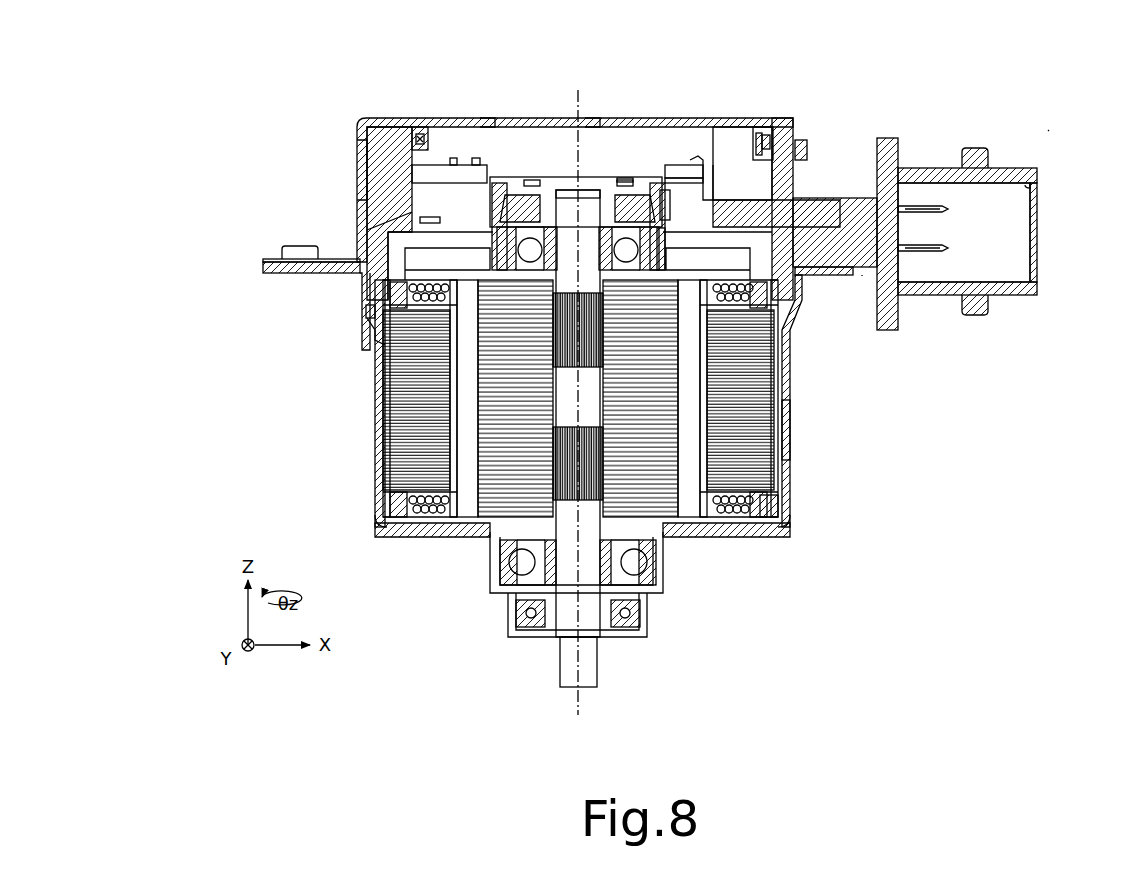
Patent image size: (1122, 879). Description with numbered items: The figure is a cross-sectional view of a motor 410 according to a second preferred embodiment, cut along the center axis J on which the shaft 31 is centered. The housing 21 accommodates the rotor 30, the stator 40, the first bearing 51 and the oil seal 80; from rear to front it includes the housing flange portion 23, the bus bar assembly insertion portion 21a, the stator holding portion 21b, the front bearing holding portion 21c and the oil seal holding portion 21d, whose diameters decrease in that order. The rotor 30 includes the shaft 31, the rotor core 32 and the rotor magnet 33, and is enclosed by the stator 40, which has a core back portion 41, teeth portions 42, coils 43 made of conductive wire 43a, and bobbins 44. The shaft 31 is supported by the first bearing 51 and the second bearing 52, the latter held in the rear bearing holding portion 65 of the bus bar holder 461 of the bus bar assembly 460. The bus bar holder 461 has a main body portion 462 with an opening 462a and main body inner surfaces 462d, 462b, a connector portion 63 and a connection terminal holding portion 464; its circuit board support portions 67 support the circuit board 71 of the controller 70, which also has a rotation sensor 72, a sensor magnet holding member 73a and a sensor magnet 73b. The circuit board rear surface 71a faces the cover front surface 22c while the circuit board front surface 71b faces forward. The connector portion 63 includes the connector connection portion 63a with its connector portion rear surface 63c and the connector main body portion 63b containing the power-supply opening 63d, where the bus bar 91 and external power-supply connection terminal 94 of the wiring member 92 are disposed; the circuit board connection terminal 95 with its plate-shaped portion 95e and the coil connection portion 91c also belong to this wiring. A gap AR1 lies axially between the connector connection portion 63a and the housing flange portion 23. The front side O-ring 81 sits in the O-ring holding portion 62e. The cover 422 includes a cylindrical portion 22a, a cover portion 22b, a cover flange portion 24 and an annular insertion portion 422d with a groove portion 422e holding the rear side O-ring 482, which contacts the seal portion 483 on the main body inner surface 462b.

The motor 410 is at (1048, 130).
The housing 21 is at (370, 425).
The bus bar assembly insertion portion 21a is at (800, 300).
The stator holding portion 21b is at (790, 425).
The front bearing holding portion 21c is at (670, 570).
The oil seal holding portion 21d is at (647, 613).
The cylindrical portion 22a is at (352, 162).
The cover portion 22b is at (590, 118).
The cover front surface 22c is at (487, 118).
The housing flange portion 23 is at (262, 270).
The cover flange portion 24 is at (262, 261).
The rotor 30 is at (668, 118).
The shaft 31 is at (597, 572).
The rotor core 32 is at (643, 443).
The rotor magnet 33 is at (690, 487).
The stator 40 is at (773, 497).
The core back portion 41 is at (432, 457).
The teeth portion 42 is at (433, 455).
The coil 43 is at (745, 488).
The conductive wire 43a is at (760, 525).
The bobbin 44 is at (710, 493).
The first bearing 51 is at (517, 560).
The second bearing 52 is at (545, 235).
The O-ring holding portion 62e is at (366, 311).
The connector portion 63 is at (977, 169).
The connector connection portion 63a is at (880, 195).
The connector main body portion 63b is at (1025, 185).
The connector portion rear surface 63c is at (850, 205).
The power-supply opening 63d is at (1035, 185).
The rear bearing holding portion 65 is at (692, 273).
The circuit board support portion 67 is at (420, 220).
The controller 70 is at (537, 165).
The circuit board 71 is at (526, 118).
The circuit board rear surface 71a is at (574, 118).
The circuit board front surface 71b is at (700, 118).
The rotation sensor 72 is at (613, 118).
The sensor magnet holding member 73a is at (540, 118).
The sensor magnet 73b is at (650, 262).
The oil seal 80 is at (645, 620).
The front side O-ring 81 is at (367, 320).
The bus bar 91 is at (925, 252).
The coil connection portion 91c is at (453, 118).
The wiring member 92 is at (922, 195).
The external power-supply connection terminal 94 is at (940, 213).
The circuit board connection terminal 95 is at (710, 118).
The plate-shaped portion 95e is at (698, 150).
The cover 422 is at (350, 180).
The insertion portion 422d is at (748, 118).
The groove portion 422e is at (764, 140).
The bus bar assembly 460 is at (948, 219).
The bus bar holder 461 is at (897, 335).
The main body portion 462 is at (385, 118).
The opening 462a is at (418, 118).
The main body inner surface 462b is at (797, 185).
The main body inner surface 462d is at (367, 228).
The connection terminal holding portion 464 is at (743, 223).
The rear side O-ring 482 is at (428, 118).
The seal portion 483 is at (783, 139).
The gap AR1 is at (862, 275).
The center axis J is at (581, 706).